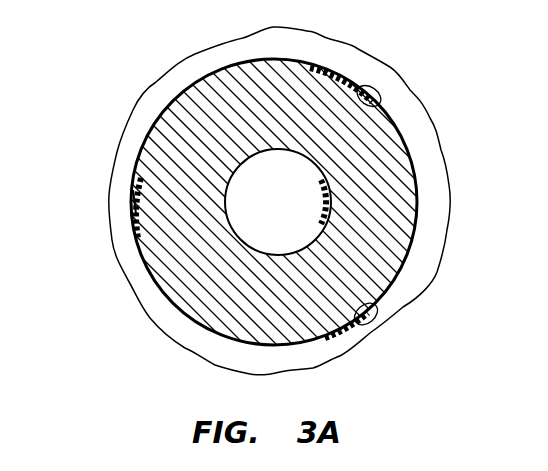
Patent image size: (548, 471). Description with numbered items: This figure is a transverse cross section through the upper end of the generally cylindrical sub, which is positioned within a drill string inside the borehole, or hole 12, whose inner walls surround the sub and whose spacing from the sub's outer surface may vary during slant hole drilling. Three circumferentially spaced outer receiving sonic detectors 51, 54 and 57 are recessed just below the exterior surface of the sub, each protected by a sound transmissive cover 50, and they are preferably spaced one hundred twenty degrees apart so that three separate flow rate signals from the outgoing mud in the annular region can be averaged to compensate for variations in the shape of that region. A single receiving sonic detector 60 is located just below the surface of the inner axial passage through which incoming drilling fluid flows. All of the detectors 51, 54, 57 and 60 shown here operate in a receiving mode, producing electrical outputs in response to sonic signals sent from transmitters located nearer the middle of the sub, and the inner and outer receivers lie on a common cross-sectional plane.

The hole 12 is at (448, 195).
The sound transmissive cover 50 is at (340, 62).
The outer receiving sonic detector 51 is at (130, 207).
The outer receiving sonic detector 54 is at (360, 103).
The outer receiving sonic detector 57 is at (363, 306).
The receiving sonic detector 60 is at (322, 198).